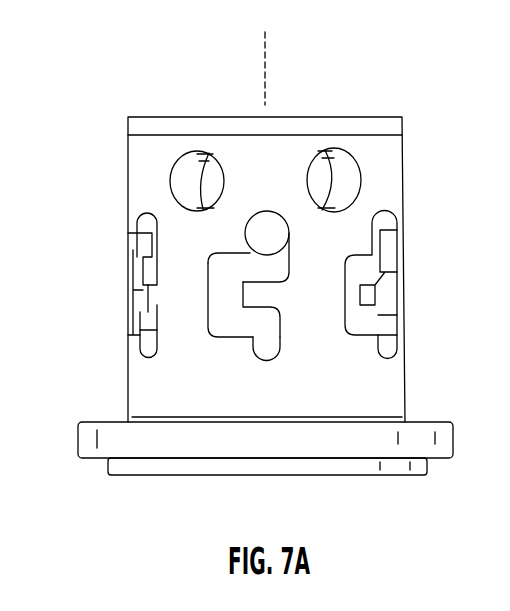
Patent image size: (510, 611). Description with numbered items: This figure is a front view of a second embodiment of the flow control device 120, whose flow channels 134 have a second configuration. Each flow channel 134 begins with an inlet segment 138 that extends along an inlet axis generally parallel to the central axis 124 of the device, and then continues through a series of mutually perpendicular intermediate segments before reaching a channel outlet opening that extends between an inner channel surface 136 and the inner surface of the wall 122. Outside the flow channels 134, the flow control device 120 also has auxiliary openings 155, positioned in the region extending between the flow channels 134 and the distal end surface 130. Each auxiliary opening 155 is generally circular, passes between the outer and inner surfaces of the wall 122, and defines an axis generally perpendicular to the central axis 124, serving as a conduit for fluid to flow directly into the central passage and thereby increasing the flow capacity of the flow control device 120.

The flow control device 120 is at (120, 71).
The wall 122 is at (141, 163).
The central axis 124 is at (268, 60).
The distal end surface 130 is at (377, 115).
The flow channels 134 is at (232, 292).
The inner channel surface 136 is at (227, 318).
The inlet segment 138 is at (265, 345).
The auxiliary openings 155 is at (208, 172).